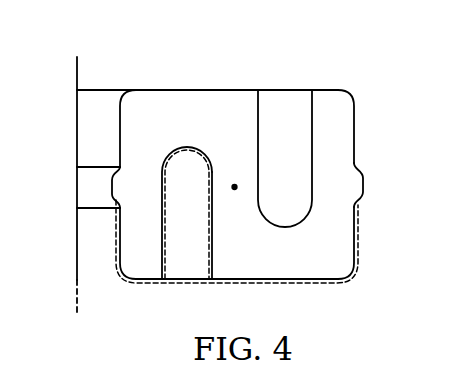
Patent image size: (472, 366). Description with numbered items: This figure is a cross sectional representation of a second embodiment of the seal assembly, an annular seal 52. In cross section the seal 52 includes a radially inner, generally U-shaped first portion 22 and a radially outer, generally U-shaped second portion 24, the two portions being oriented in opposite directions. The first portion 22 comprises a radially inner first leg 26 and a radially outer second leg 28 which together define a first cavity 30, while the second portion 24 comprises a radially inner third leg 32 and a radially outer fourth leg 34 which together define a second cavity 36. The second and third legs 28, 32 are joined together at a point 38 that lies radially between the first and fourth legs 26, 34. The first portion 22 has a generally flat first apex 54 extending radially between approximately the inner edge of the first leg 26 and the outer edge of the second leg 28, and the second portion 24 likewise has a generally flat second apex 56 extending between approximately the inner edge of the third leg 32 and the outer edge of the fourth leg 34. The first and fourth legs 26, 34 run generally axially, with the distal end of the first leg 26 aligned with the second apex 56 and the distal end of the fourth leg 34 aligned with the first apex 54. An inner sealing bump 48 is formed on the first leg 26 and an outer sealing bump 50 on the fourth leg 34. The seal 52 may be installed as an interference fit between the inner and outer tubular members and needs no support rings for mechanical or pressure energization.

The first portion 22 is at (237, 179).
The second portion 24 is at (315, 283).
The first leg 26 is at (118, 241).
The second leg 28 is at (249, 117).
The first cavity 30 is at (192, 213).
The third leg 32 is at (222, 211).
The fourth leg 34 is at (355, 138).
The second cavity 36 is at (297, 208).
The point 38 is at (236, 186).
The inner sealing bump 48 is at (112, 186).
The outer sealing bump 50 is at (364, 183).
The annular seal 52 is at (237, 179).
The first apex 54 is at (200, 90).
The second apex 56 is at (278, 283).